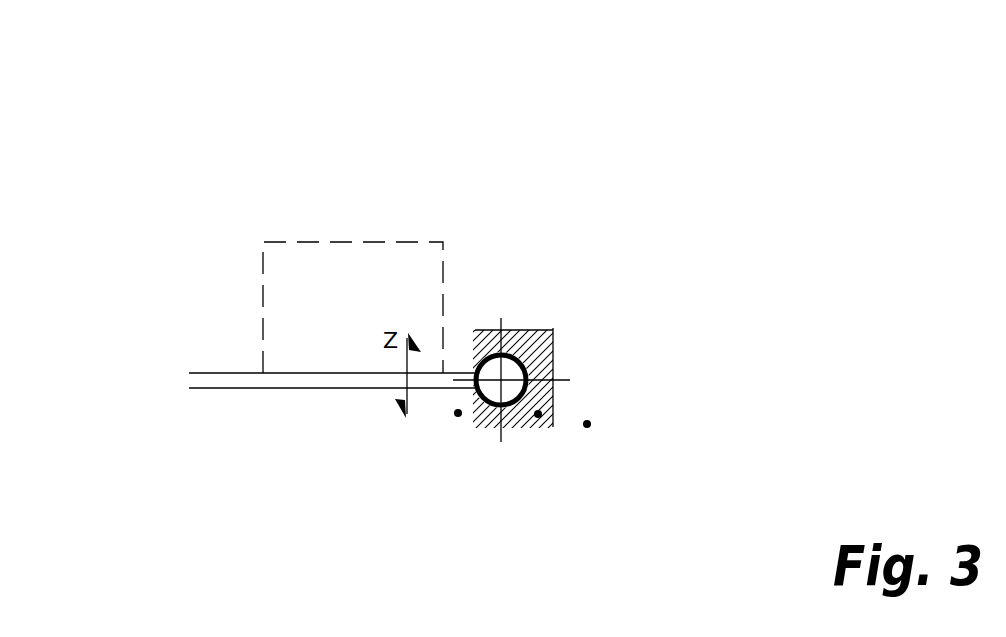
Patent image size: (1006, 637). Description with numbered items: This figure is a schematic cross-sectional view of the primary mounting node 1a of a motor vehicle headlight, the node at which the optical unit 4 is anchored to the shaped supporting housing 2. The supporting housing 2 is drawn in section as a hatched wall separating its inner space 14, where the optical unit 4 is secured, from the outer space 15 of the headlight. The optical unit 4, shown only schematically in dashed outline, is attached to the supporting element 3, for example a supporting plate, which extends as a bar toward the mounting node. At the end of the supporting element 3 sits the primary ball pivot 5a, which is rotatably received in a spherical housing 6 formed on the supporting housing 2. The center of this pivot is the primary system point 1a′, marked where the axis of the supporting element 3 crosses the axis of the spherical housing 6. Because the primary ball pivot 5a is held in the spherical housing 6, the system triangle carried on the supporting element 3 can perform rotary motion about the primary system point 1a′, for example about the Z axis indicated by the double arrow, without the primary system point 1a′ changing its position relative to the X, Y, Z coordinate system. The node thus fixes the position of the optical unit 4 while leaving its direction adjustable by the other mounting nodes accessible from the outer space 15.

The primary mounting node 1a is at (588, 150).
The primary system point 1a′ is at (505, 408).
The supporting housing 2 is at (540, 413).
The supporting element 3 is at (248, 392).
The optical unit 4 is at (318, 240).
The primary ball pivot 5a is at (556, 342).
The spherical housing 6 is at (508, 363).
The inner space 14 is at (453, 422).
The outer space 15 is at (587, 424).